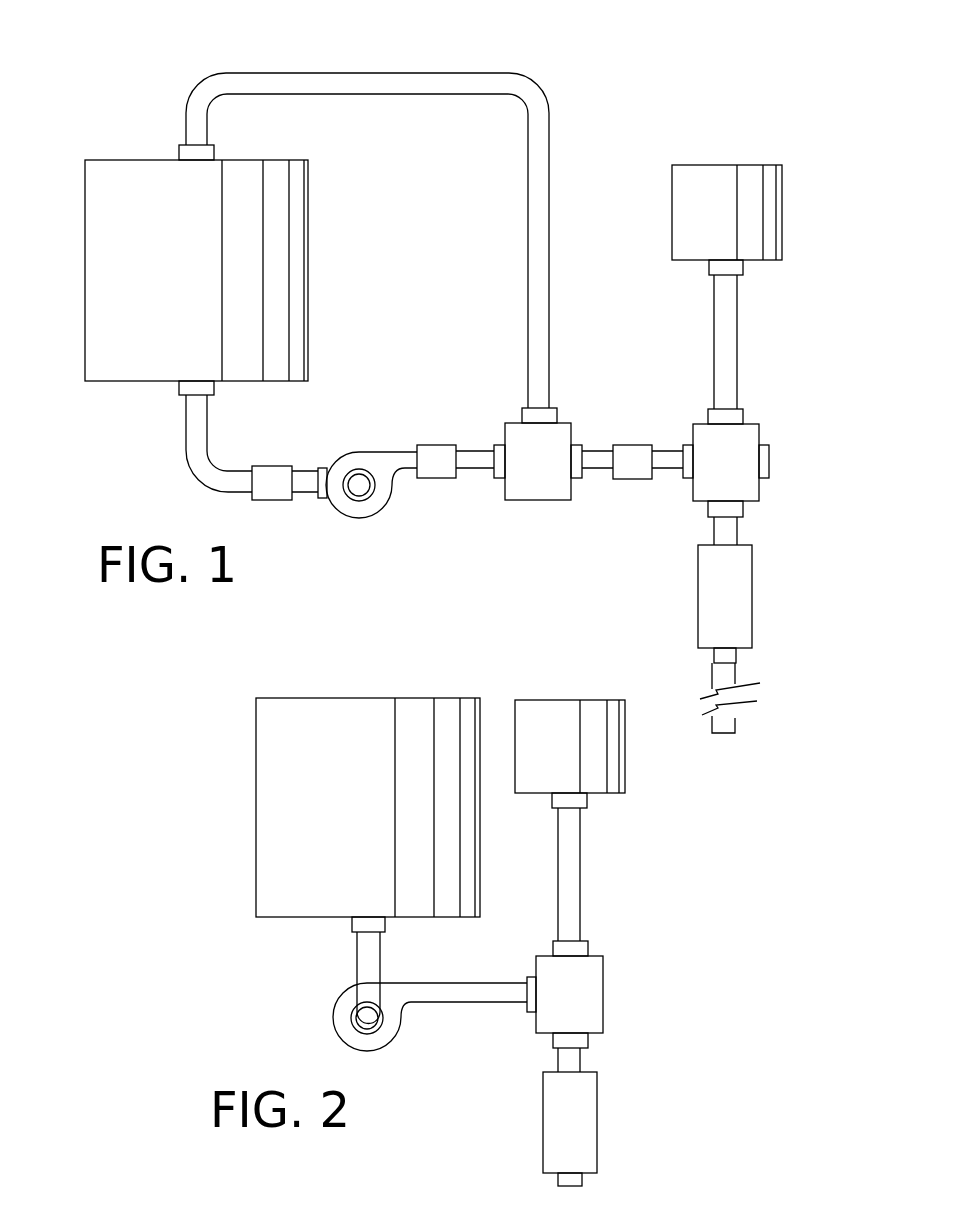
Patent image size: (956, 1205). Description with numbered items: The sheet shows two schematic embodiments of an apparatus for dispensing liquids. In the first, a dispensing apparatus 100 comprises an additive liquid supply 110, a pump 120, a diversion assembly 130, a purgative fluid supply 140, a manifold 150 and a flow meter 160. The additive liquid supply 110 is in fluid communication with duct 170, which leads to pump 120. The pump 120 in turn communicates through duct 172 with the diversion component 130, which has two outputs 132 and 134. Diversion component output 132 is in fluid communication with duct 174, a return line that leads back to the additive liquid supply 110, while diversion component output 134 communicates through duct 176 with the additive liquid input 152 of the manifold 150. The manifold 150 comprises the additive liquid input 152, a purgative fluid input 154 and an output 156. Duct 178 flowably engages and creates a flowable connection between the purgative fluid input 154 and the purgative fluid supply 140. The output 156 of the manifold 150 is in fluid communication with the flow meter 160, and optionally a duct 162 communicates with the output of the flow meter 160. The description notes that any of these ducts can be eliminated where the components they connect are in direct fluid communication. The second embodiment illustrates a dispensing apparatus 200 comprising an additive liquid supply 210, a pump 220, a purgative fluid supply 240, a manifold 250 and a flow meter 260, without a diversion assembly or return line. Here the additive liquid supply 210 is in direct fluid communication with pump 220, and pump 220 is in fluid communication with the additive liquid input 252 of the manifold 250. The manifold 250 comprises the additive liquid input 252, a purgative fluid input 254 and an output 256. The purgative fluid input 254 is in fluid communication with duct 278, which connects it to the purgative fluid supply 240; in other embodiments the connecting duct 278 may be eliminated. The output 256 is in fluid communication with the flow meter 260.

In FIG. 1, the dispensing apparatus 100 is at (583, 77).
In FIG. 1, the additive liquid supply 110 is at (132, 178).
In FIG. 1, the pump 120 is at (352, 511).
In FIG. 1, the diversion assembly 130 is at (538, 495).
In FIG. 1, the diversion component output 132 is at (527, 408).
In FIG. 1, the diversion component output 134 is at (580, 482).
In FIG. 1, the purgative fluid supply 140 is at (773, 176).
In FIG. 1, the manifold 150 is at (748, 437).
In FIG. 1, the additive liquid input 152 is at (687, 440).
In FIG. 1, the purgative fluid input 154 is at (728, 405).
In FIG. 1, the output 156 is at (740, 512).
In FIG. 1, the flow meter 160 is at (730, 617).
In FIG. 1, the duct 162 is at (730, 684).
In FIG. 1, the duct 170 is at (185, 430).
In FIG. 1, the duct 172 is at (446, 484).
In FIG. 1, the duct 174 is at (343, 77).
In FIG. 1, the duct 176 is at (632, 485).
In FIG. 1, the duct 178 is at (735, 306).
In FIG. 2, the dispensing apparatus 200 is at (722, 833).
In FIG. 2, the additive liquid supply 210 is at (300, 703).
In FIG. 2, the pump 220 is at (342, 1005).
In FIG. 2, the purgative fluid supply 240 is at (541, 718).
In FIG. 2, the manifold 250 is at (583, 993).
In FIG. 2, the additive liquid input 252 is at (528, 1005).
In FIG. 2, the purgative fluid input 254 is at (585, 944).
In FIG. 2, the output 256 is at (590, 1040).
In FIG. 2, the flow meter 260 is at (585, 1100).
In FIG. 2, the duct 278 is at (572, 873).